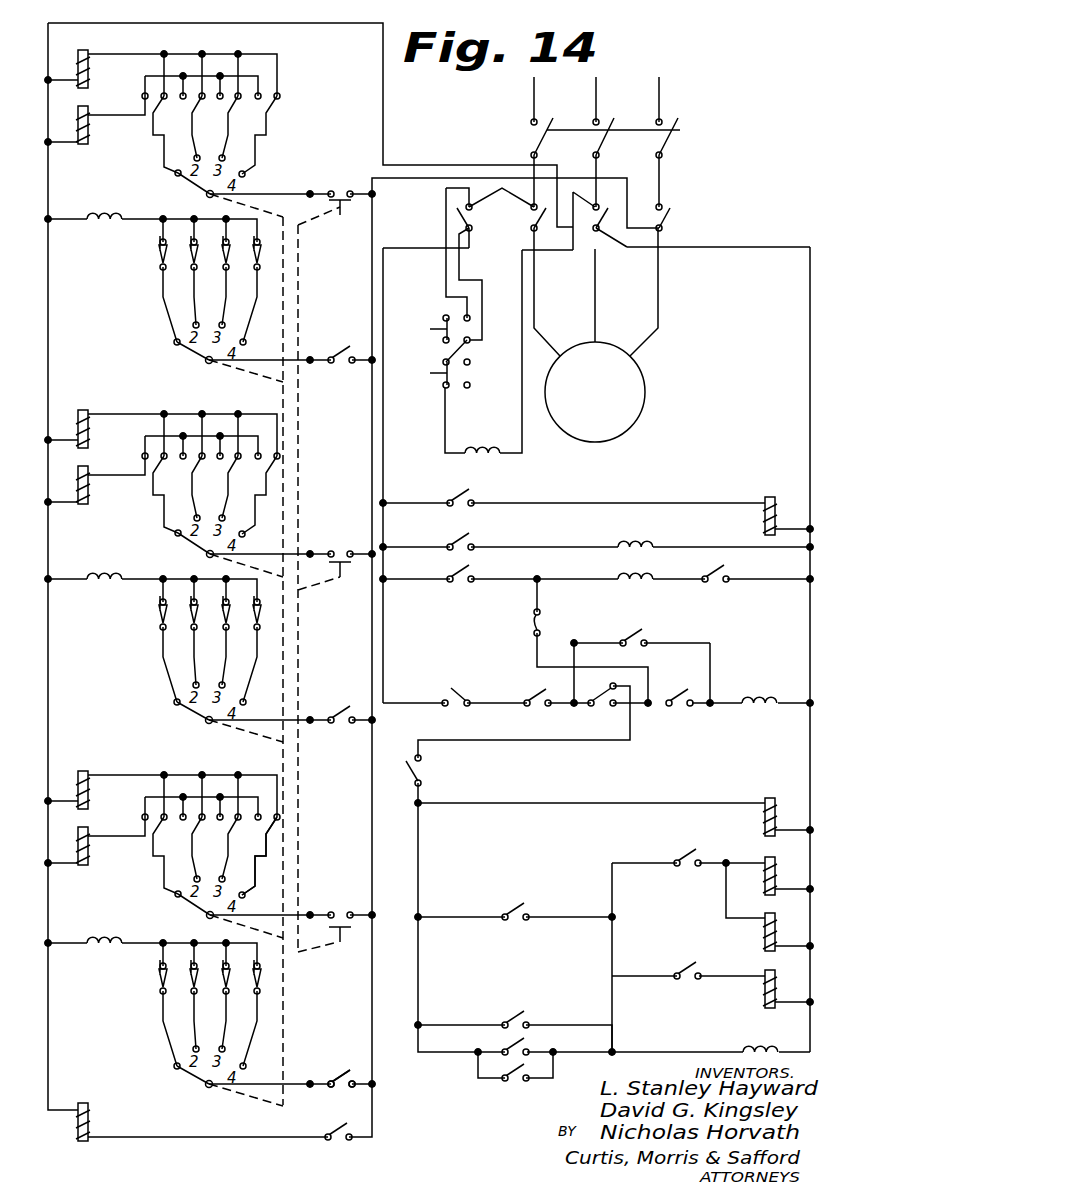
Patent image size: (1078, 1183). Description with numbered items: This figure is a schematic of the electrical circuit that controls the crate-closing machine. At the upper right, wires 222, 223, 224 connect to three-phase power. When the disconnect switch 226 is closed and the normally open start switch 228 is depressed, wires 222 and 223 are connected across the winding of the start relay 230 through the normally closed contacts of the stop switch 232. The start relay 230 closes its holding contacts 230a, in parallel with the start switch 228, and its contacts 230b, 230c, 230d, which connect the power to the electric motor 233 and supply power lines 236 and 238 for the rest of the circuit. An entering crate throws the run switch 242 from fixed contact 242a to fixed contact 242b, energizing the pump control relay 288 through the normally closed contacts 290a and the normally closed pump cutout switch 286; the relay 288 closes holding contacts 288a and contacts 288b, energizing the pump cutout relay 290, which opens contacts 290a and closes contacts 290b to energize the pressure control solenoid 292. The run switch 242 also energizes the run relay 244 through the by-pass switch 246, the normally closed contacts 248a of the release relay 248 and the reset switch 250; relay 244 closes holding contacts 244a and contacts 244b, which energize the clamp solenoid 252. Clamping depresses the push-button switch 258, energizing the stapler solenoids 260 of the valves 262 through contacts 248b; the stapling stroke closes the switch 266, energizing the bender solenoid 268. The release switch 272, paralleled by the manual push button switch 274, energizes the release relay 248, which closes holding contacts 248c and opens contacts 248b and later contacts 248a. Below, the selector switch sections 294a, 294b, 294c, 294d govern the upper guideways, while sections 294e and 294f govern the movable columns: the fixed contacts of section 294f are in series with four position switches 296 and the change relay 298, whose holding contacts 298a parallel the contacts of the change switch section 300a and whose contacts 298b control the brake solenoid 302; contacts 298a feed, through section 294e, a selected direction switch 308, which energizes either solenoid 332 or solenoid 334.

The wire 222 is at (531, 92).
The wire 223 is at (594, 92).
The wire 224 is at (657, 92).
The disconnect switch 226 is at (687, 136).
The start switch 228 is at (441, 319).
The start relay 230 is at (466, 451).
The holding contacts 230a is at (495, 209).
The relay contacts 230b is at (554, 230).
The relay contacts 230c is at (620, 237).
The relay contacts 230d is at (666, 220).
The stop switch 232 is at (441, 384).
The electric motor 233 is at (644, 378).
The power line 236 is at (383, 450).
The power line 238 is at (810, 414).
The run switch 242 is at (598, 708).
The fixed contact 242a is at (612, 683).
The fixed contact 242b is at (613, 707).
The run relay 244 is at (747, 700).
The holding contacts 244a is at (645, 640).
The relay contacts 244b is at (421, 771).
The by-pass switch 246 is at (439, 691).
The release relay 248 is at (745, 1050).
The relay contacts 248a is at (521, 691).
The relay contacts 248b is at (507, 901).
The holding contacts 248c is at (494, 1012).
The reset switch 250 is at (677, 707).
The clamp solenoid 252 is at (763, 822).
The push-button switch 258 is at (687, 857).
The stapler solenoids 260 is at (763, 938).
The valves 262 is at (764, 883).
The push-button switch 266 is at (666, 964).
The bender solenoid 268 is at (763, 992).
The release switch 272 is at (508, 1043).
The push button switch 274 is at (513, 1075).
The pump cutout switch 286 is at (726, 579).
The pump control relay 288 is at (622, 579).
The holding contacts 288a is at (453, 583).
The relay contacts 288b is at (453, 537).
The pump cutout relay 290 is at (622, 547).
The relay contacts 290a is at (562, 621).
The relay contacts 290b is at (482, 488).
The pressure control solenoid 292 is at (774, 497).
The selector switch section 294a is at (172, 178).
The selector switch section 294b is at (175, 348).
The selector switch section 294c is at (173, 540).
The selector switch section 294d is at (175, 709).
The selector switch section 294e is at (174, 899).
The selector switch section 294f is at (180, 1074).
The position switches 296 is at (150, 981).
The change relay 298 is at (87, 945).
The holding contacts 298a is at (334, 1065).
The relay contacts 298b is at (334, 1122).
The change switch section 300a is at (332, 942).
The brake solenoid 302 is at (90, 1117).
The direction switches 308 is at (275, 836).
The solenoid 332 is at (90, 860).
The solenoid 334 is at (90, 788).